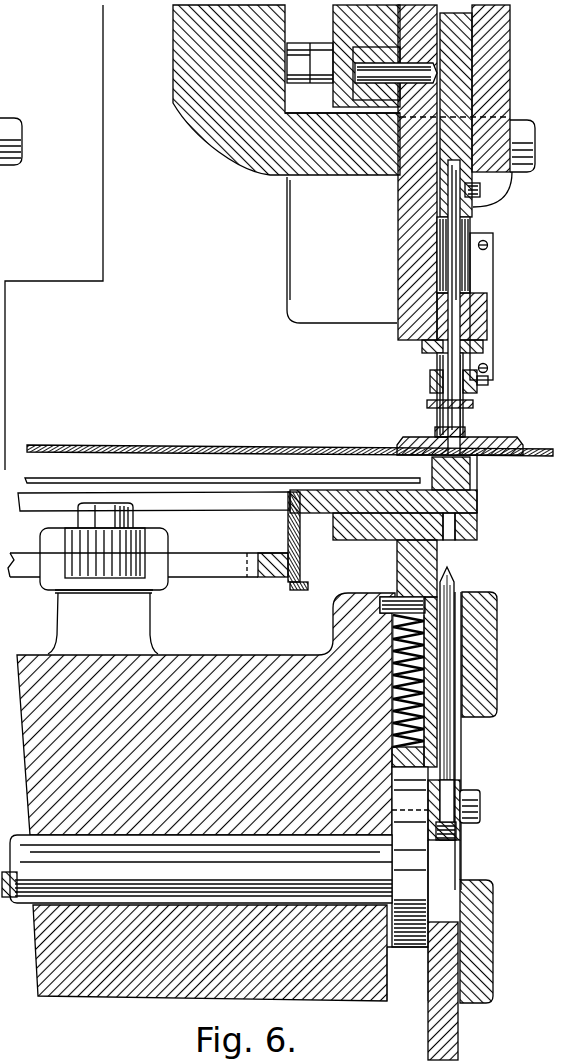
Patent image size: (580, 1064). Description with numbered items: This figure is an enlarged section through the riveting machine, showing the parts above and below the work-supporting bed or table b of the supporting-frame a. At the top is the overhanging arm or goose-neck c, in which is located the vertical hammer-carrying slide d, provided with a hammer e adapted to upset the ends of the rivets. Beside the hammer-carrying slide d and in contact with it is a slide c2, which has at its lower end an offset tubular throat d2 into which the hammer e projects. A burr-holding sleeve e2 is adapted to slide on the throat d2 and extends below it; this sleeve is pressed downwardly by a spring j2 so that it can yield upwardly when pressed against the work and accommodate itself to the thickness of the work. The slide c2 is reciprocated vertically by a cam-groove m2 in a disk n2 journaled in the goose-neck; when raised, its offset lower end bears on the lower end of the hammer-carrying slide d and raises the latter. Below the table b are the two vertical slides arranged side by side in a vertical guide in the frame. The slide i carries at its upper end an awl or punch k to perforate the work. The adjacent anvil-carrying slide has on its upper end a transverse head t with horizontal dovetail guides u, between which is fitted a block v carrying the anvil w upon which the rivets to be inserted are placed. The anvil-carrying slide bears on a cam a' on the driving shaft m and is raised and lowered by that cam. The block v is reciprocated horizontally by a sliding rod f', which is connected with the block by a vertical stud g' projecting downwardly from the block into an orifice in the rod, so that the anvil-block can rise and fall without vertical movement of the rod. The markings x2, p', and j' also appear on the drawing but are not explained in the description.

The disk n2 is at (347, 27).
The overhanging arm or goose-neck c is at (286, 90).
The cam-groove m2 is at (342, 126).
The hammer-carrying slide d is at (467, 49).
The slide c2 is at (398, 192).
The hammer e is at (470, 273).
The offset tubular throat d2 is at (440, 361).
The spring j2 is at (472, 392).
The burr-holding sleeve e2 is at (470, 415).
The reference line x2 is at (432, 433).
The bed or table b is at (290, 445).
The anvil w is at (477, 472).
The horizontal dovetail guides u is at (477, 498).
The block v is at (383, 502).
The transverse head t is at (405, 555).
The awl or punch k is at (455, 588).
The vertical stud g' is at (279, 541).
The sliding rod f' is at (148, 579).
The thin plate p' is at (222, 452).
The supporting-frame a is at (206, 714).
The spring seat j' is at (387, 760).
The cam a' is at (390, 857).
The vertical slide i is at (467, 840).
The driving shaft m is at (194, 953).